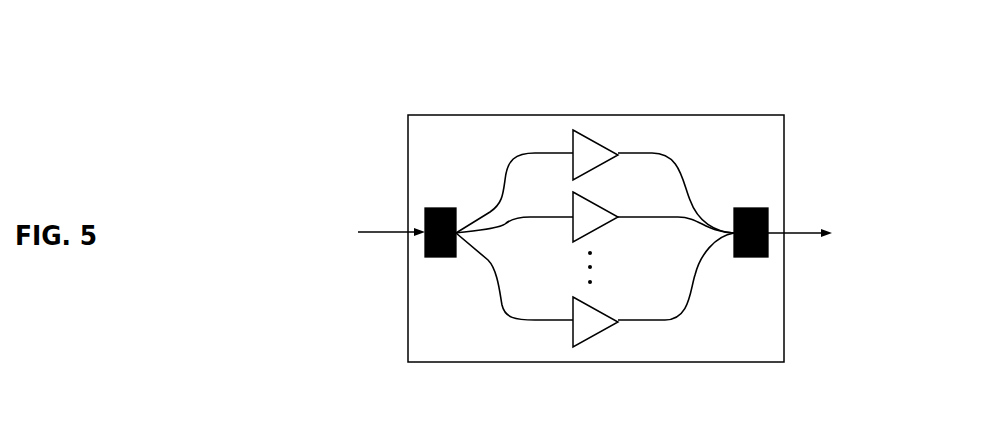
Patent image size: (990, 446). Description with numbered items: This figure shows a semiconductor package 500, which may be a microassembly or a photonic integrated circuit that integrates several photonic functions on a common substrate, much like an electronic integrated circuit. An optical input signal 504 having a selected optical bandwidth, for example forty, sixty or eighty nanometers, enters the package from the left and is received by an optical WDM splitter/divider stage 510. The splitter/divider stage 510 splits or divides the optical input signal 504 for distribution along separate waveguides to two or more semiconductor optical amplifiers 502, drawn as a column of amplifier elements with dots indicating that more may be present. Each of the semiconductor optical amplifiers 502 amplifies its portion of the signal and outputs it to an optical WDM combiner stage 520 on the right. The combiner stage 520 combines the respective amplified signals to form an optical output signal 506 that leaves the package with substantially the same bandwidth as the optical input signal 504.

The semiconductor package 500 is at (590, 112).
The semiconductor optical amplifiers 502 is at (595, 357).
The optical input signal 504 is at (341, 240).
The optical output signal 506 is at (809, 247).
The optical WDM splitter/divider stage 510 is at (425, 208).
The optical WDM combiner stage 520 is at (768, 193).